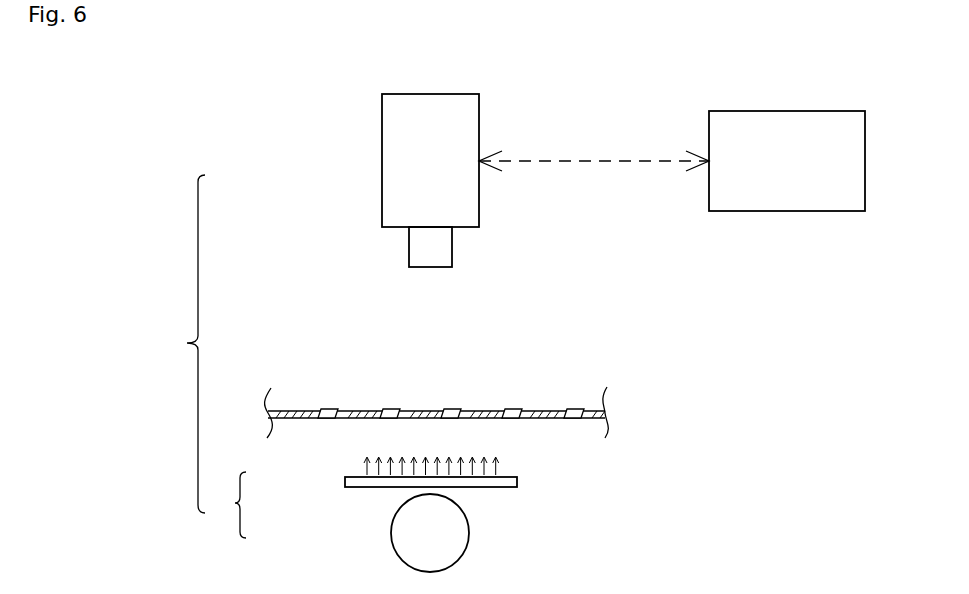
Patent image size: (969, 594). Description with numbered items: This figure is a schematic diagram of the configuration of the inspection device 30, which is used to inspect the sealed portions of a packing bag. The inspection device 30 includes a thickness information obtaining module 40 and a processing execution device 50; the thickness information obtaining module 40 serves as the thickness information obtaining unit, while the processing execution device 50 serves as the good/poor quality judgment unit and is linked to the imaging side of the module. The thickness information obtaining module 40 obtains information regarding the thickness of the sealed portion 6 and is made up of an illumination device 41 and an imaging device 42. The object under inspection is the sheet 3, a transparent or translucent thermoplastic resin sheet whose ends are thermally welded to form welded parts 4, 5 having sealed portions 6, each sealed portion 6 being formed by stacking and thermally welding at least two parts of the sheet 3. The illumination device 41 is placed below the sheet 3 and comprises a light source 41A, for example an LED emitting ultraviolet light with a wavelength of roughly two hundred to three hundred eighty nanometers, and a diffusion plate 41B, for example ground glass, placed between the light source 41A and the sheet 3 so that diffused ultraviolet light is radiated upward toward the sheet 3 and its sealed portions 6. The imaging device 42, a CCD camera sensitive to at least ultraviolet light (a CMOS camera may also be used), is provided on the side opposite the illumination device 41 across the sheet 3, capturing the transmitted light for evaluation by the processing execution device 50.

The inspection device 30 is at (337, 100).
The imaging device 42 is at (382, 187).
The processing execution device 50 is at (850, 111).
The thickness information obtaining module 40 is at (180, 344).
The illumination device 41 is at (227, 505).
The diffusion plate 41B is at (345, 479).
The light source 41A is at (392, 535).
The sheet 3 is at (570, 410).
The welded part 4 is at (482, 410).
The welded part 5 is at (436, 373).
The sealed portion 6 is at (357, 410).